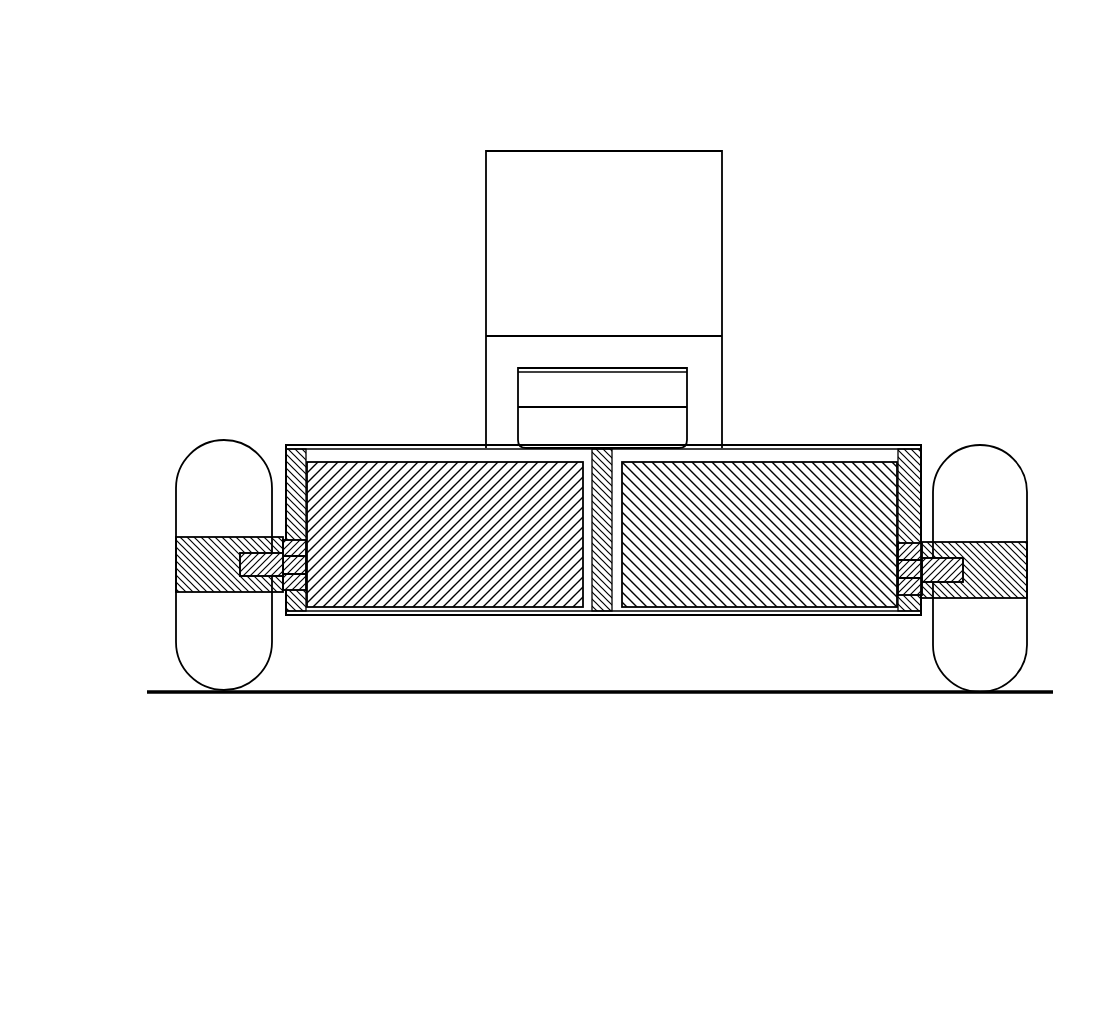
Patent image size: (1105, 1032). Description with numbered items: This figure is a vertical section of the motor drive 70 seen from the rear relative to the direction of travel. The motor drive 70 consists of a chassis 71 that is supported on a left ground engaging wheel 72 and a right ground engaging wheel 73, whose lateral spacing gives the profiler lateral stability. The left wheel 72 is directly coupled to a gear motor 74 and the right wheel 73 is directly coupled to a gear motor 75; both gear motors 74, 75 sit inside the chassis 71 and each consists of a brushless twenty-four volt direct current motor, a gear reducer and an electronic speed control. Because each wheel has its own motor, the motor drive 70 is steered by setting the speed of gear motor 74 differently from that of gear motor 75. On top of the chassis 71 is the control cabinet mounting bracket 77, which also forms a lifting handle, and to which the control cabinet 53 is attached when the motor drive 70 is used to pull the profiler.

The motor drive 70 is at (178, 118).
The chassis 71 is at (347, 445).
The left ground engaging wheel 72 is at (220, 605).
The right ground engaging wheel 73 is at (969, 608).
The gear motor 74 is at (395, 582).
The gear motor 75 is at (800, 607).
The control cabinet 53 is at (683, 203).
The control cabinet mounting bracket 77 is at (707, 368).